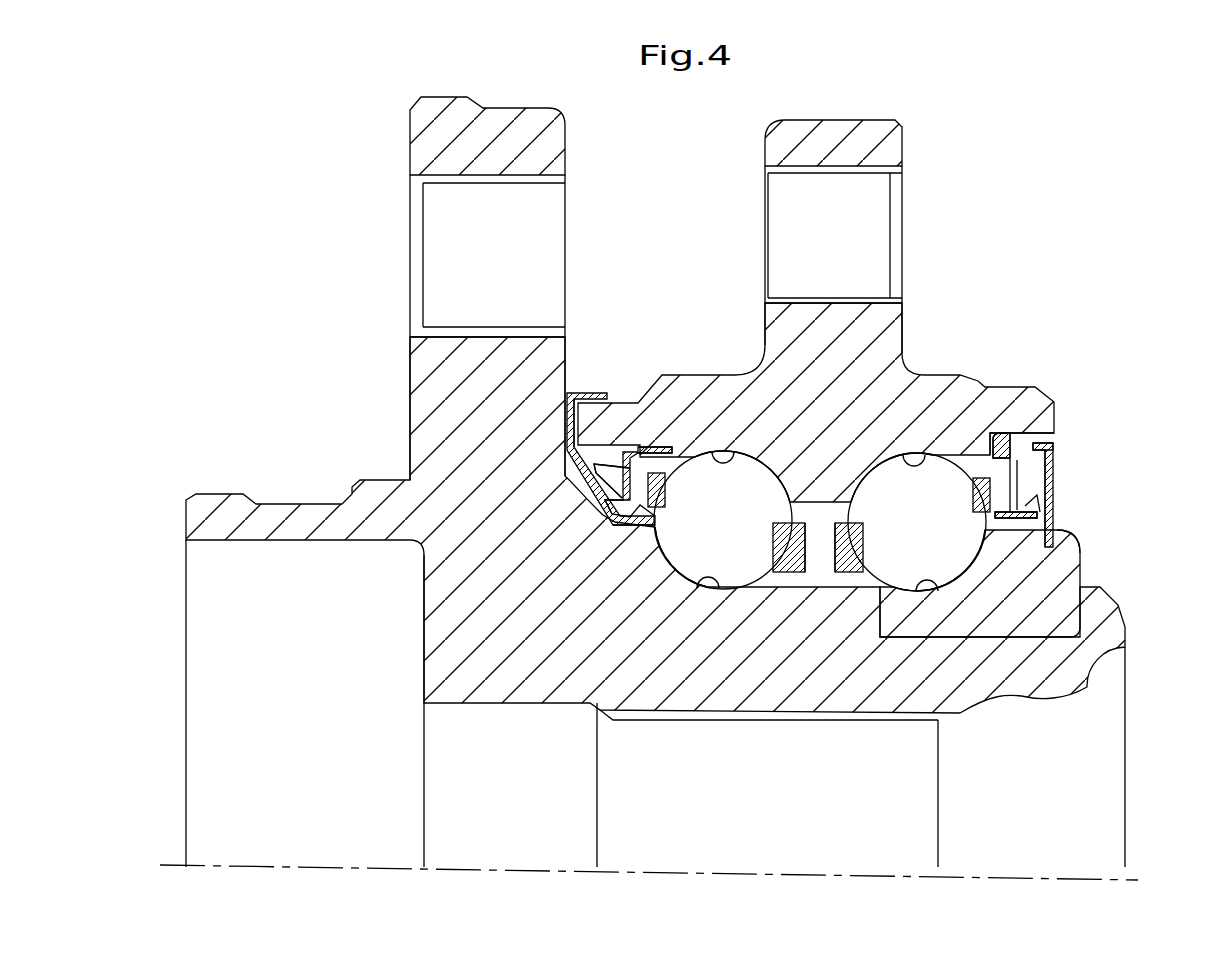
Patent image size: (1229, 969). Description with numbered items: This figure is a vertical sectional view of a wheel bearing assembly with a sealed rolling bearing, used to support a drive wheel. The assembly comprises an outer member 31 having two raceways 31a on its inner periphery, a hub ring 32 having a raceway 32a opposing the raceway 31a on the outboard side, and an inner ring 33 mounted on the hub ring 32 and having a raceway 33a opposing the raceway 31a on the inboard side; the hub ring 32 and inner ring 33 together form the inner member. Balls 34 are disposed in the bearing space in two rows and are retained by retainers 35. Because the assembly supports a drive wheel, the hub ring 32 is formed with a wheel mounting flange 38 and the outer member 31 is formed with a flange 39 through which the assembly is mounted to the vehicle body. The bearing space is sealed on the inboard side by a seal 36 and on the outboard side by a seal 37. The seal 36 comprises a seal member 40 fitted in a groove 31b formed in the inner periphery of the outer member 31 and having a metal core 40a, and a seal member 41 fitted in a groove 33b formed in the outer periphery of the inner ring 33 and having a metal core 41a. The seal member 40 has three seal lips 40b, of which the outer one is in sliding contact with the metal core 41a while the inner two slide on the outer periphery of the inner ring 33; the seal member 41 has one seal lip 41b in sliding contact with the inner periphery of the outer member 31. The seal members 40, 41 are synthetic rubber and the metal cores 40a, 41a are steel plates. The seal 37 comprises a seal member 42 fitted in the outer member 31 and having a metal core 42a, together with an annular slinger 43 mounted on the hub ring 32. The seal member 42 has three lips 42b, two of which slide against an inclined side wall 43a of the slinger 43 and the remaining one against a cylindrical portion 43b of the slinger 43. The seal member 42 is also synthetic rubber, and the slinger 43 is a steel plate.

The outer member 31 is at (753, 374).
The raceway 31a is at (712, 455).
The groove 31b is at (1005, 435).
The hub ring 32 is at (420, 482).
The raceway 32a is at (688, 575).
The inner ring 33 is at (1065, 557).
The raceway 33a is at (897, 555).
The groove 33b is at (1040, 533).
The balls 34 is at (745, 555).
The retainers 35 is at (803, 548).
The seal 36 is at (1063, 480).
The seal 37 is at (410, 367).
The wheel mounting flange 38 is at (478, 133).
The flange 39 is at (820, 140).
The seal member 40 is at (1040, 432).
The metal core 40a is at (995, 437).
The seal lips 40b is at (1025, 517).
The seal member 41 is at (1057, 530).
The metal core 41a is at (1060, 495).
The seal lip 41b is at (1050, 443).
The seal member 42 is at (627, 455).
The metal core 42a is at (640, 405).
The lips 42b is at (640, 518).
The slinger 43 is at (575, 392).
The inclined side wall 43a is at (550, 423).
The cylindrical portion 43b is at (637, 530).